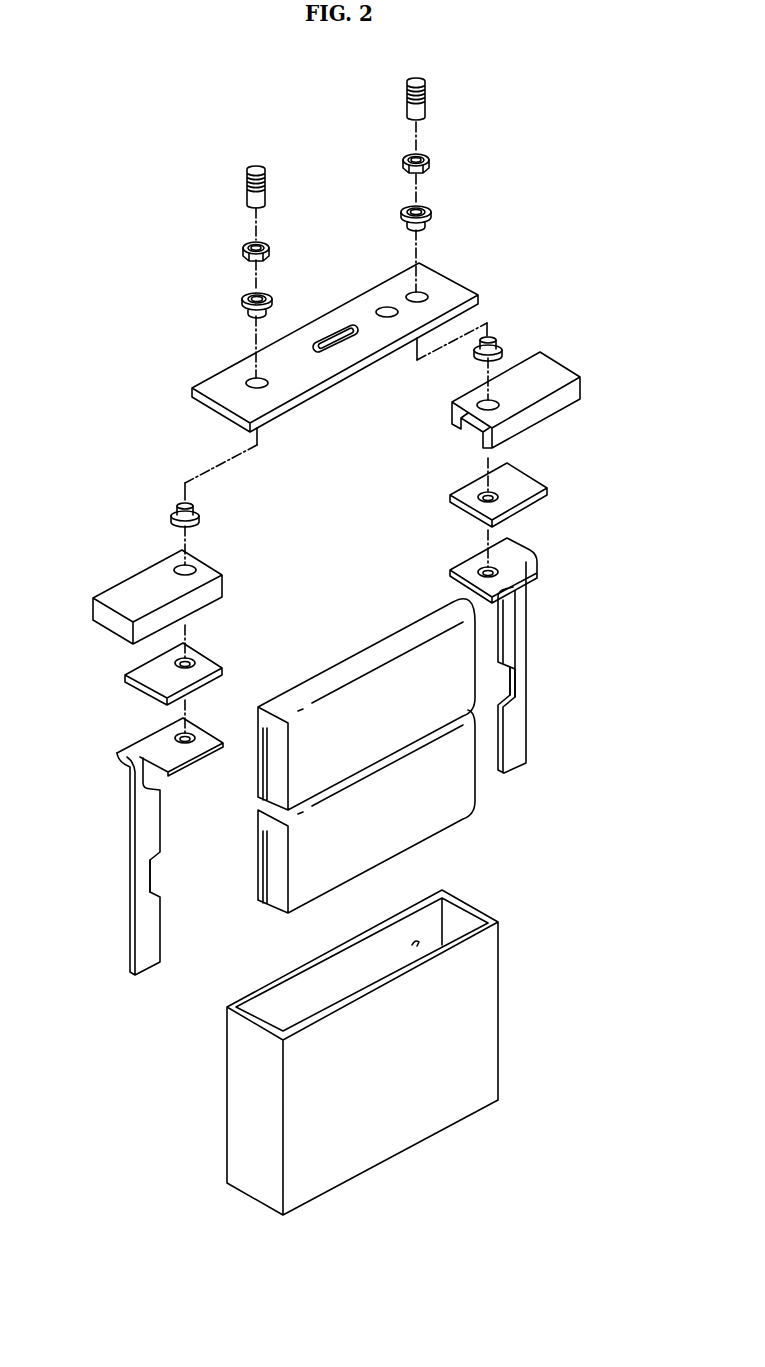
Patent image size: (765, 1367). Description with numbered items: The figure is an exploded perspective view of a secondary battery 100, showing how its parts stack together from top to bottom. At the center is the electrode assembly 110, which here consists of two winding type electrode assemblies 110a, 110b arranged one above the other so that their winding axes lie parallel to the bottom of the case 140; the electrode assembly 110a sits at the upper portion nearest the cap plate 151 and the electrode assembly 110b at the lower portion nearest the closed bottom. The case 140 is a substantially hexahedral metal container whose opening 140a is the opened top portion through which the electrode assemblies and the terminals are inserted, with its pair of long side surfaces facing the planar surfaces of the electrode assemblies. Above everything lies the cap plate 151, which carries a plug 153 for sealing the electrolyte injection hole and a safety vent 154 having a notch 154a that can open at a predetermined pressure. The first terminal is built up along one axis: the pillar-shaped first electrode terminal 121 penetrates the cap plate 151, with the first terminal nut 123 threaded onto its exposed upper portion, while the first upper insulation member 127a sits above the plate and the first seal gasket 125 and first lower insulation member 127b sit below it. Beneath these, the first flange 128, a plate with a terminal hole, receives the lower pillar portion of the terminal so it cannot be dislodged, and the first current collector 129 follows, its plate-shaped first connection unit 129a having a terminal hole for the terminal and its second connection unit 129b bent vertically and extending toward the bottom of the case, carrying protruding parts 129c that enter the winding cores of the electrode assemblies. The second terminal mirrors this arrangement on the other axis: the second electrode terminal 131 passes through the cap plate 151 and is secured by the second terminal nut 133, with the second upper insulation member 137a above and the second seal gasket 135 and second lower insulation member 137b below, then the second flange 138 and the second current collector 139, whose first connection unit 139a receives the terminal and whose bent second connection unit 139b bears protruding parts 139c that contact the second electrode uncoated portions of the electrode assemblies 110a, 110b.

The secondary battery 100 is at (120, 150).
The electrode assembly 110 is at (444, 756).
The electrode assembly 110a is at (435, 715).
The electrode assembly 110b is at (478, 815).
The first electrode terminal 121 is at (246, 176).
The first terminal nut 123 is at (242, 248).
The first seal gasket 125 is at (170, 515).
The first upper insulation member 127a is at (241, 300).
The first lower insulation member 127b is at (142, 578).
The first flange 128 is at (128, 667).
The first current collector 129 is at (142, 838).
The first connection unit 129a is at (183, 757).
The second connection unit 129b is at (143, 877).
The protruding parts 129c is at (158, 822).
The second electrode terminal 131 is at (427, 90).
The second terminal nut 133 is at (430, 162).
The second seal gasket 135 is at (497, 343).
The second upper insulation member 137a is at (433, 213).
The second lower insulation member 137b is at (558, 368).
The second flange 138 is at (522, 480).
The second current collector 139 is at (527, 641).
The first connection unit 139a is at (512, 556).
The second connection unit 139b is at (523, 623).
The protruding parts 139c is at (508, 647).
The case 140 is at (402, 1052).
The opening 140a is at (416, 942).
The cap plate 151 is at (338, 335).
The plug 153 is at (386, 306).
The safety vent 154 is at (320, 299).
The notch 154a is at (327, 338).